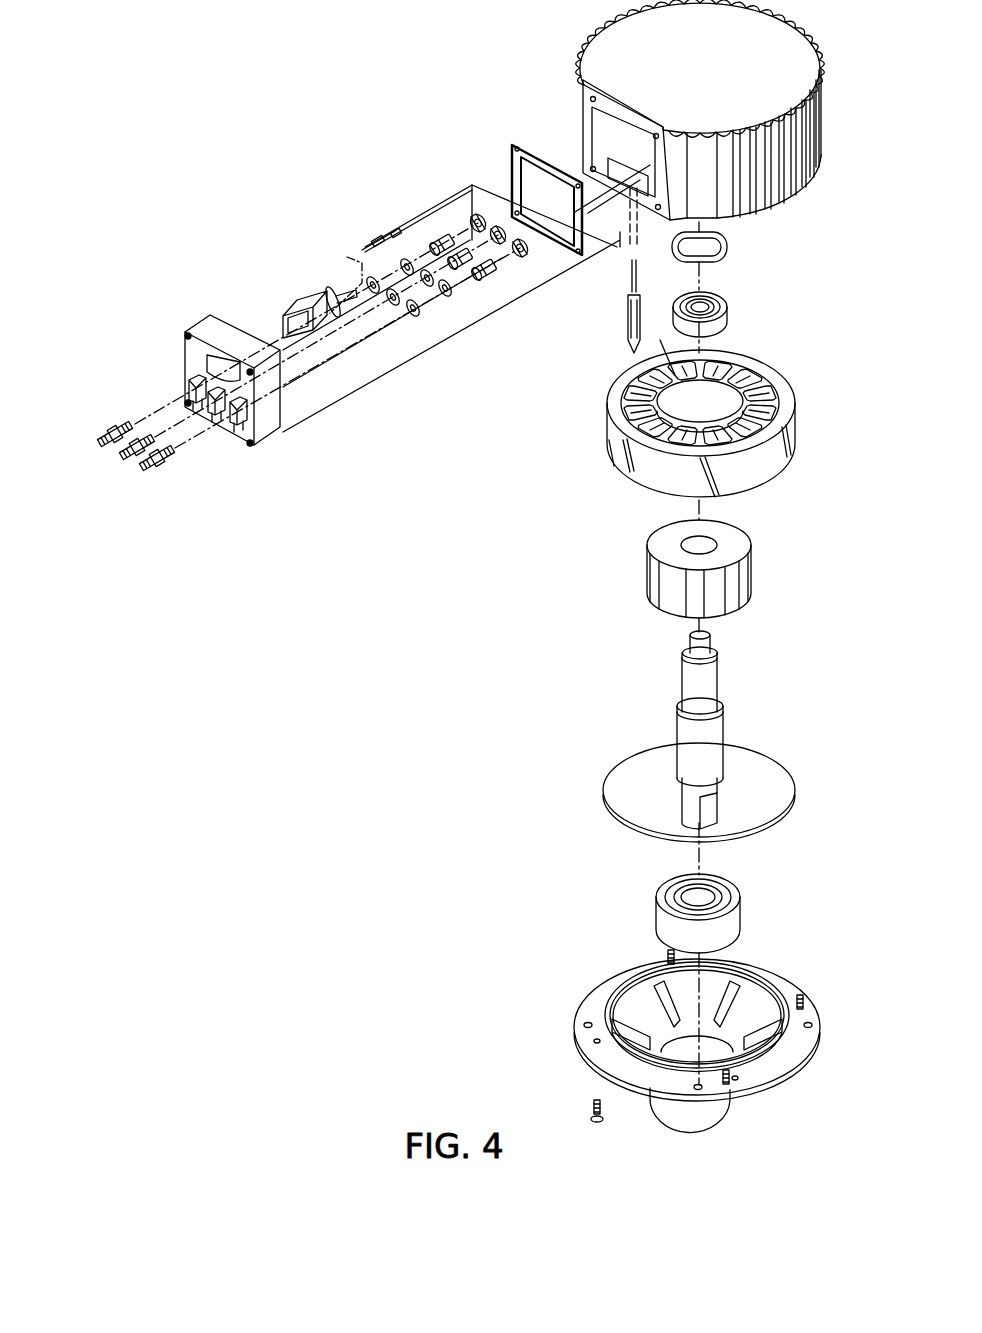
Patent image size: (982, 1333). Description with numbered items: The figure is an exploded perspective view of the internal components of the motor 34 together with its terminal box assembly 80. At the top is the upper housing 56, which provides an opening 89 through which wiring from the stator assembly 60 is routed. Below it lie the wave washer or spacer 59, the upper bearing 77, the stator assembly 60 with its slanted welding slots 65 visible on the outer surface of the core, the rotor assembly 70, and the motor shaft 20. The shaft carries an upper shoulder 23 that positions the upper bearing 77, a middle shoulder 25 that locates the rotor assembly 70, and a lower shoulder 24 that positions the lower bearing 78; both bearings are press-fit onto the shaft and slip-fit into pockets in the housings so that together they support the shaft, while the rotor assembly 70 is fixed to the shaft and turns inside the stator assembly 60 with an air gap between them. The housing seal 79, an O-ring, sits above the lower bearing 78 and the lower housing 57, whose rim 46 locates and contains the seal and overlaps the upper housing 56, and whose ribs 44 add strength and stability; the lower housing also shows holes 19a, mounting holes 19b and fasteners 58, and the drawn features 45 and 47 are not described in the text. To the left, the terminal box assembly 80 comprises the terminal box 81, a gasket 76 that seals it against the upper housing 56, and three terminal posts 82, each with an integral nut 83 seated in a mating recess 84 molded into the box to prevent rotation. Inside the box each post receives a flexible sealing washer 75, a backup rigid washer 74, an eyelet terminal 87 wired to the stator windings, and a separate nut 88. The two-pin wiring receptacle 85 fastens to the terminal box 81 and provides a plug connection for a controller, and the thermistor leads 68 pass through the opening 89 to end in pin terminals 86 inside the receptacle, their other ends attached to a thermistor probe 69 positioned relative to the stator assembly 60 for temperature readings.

The motor 34 is at (150, 62).
The terminal box assembly 80 is at (172, 248).
The upper housing 56 is at (687, 68).
The opening 89 is at (640, 176).
The gasket 76 is at (518, 148).
The terminal box 81 is at (197, 333).
The terminal posts 82 is at (100, 437).
The integral nut 83 is at (122, 432).
The mating recess 84 is at (238, 414).
The wiring receptacle 85 is at (300, 300).
The pin terminals 86 is at (378, 240).
The eyelet terminal 87 is at (495, 279).
The nut 88 is at (526, 257).
The rigid washer 74 is at (451, 296).
The flexible sealing washer 75 is at (418, 316).
The thermistor leads 68 is at (433, 213).
The thermistor probe 69 is at (629, 320).
The wave washer 59 is at (730, 246).
The upper bearing 77 is at (728, 311).
The stator assembly 60 is at (815, 412).
The welding slots 65 is at (618, 457).
The rotor assembly 70 is at (778, 548).
The motor shaft 20 is at (718, 683).
The upper shoulder 23 is at (689, 644).
The middle shoulder 25 is at (680, 700).
The lower shoulder 24 is at (681, 790).
The housing seal 79 is at (770, 758).
The lower bearing 78 is at (742, 906).
The lower housing 57 is at (698, 1047).
The rim 46 is at (770, 977).
The ribs 44 is at (702, 996).
The rib 45 is at (640, 1015).
The boss 47 is at (796, 1075).
The fasteners 58 is at (667, 953).
The holes 19a is at (595, 1042).
The mounting holes 19b is at (584, 1026).